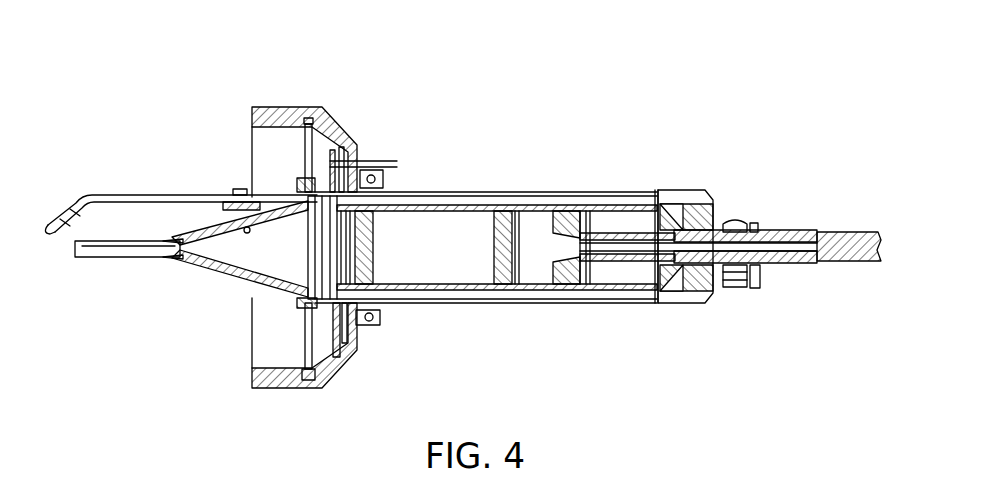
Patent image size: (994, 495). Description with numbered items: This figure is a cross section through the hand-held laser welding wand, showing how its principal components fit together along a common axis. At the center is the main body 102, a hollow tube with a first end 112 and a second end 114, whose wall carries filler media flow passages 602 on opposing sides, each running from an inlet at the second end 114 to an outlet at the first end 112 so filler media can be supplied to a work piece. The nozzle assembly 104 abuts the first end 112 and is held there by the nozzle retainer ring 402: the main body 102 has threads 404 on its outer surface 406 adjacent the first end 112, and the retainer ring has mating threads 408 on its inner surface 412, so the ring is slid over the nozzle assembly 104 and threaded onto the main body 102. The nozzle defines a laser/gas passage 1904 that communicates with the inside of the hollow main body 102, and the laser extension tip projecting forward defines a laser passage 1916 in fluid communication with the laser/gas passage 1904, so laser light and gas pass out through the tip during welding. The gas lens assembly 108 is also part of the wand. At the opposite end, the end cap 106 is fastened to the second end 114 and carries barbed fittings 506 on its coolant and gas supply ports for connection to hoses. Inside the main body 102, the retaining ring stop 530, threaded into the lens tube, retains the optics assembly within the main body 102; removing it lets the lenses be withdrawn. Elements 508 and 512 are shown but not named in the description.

The main body 102 is at (577, 195).
The nozzle assembly 104 is at (185, 185).
The end cap 106 is at (690, 191).
The gas lens assembly 108 is at (273, 96).
The first end 112 is at (320, 188).
The second end 114 is at (656, 191).
The nozzle retainer ring 402 is at (302, 183).
The threads 404 is at (330, 318).
The outer surface 406 is at (443, 192).
The threads 408 is at (306, 304).
The inner surface 412 is at (333, 185).
The barbed fitting 506 is at (735, 221).
The rod 508 is at (850, 232).
The shaft 512 is at (590, 263).
The retaining ring stop 530 is at (326, 280).
The filler media flow passage 602 is at (506, 204).
The laser/gas passage 1904 is at (295, 265).
The laser passage 1916 is at (112, 251).